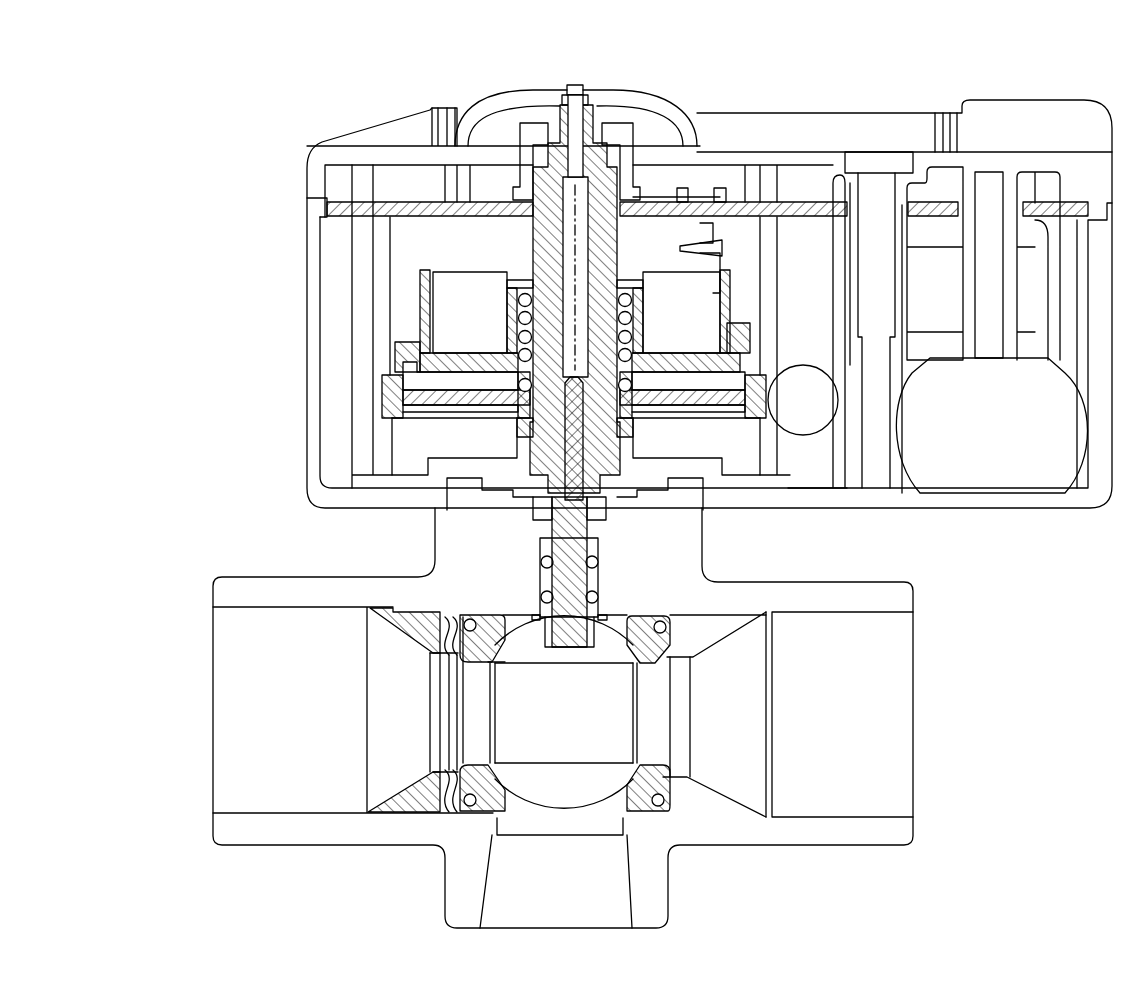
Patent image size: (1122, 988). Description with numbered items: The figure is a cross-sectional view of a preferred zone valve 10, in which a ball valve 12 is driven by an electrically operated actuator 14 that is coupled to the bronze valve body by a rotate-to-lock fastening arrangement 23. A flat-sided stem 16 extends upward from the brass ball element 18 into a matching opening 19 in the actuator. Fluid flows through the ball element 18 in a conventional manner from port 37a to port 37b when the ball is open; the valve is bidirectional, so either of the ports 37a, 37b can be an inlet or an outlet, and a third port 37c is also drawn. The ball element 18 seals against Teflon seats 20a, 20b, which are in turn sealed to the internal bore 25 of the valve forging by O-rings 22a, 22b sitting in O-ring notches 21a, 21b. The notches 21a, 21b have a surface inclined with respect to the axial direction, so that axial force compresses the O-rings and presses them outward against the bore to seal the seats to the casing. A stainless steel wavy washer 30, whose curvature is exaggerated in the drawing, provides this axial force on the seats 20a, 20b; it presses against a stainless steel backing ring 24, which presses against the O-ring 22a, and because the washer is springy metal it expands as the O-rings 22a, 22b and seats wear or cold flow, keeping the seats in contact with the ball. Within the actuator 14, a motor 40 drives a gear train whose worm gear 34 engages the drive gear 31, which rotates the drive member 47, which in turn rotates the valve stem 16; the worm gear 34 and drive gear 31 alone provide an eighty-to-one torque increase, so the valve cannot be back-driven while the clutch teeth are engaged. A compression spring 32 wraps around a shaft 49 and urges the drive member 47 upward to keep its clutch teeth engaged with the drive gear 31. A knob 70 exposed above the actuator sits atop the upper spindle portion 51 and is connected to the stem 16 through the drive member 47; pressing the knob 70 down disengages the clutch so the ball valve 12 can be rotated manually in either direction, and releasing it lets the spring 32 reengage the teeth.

The zone valve 10 is at (258, 118).
The ball valve 12 is at (240, 558).
The actuator 14 is at (246, 284).
The stem 16 is at (527, 430).
The ball element 18 is at (551, 795).
The opening 19 is at (604, 508).
The seat 20a is at (492, 616).
The seat 20b is at (637, 616).
The O-ring notch 21a is at (495, 664).
The O-ring notch 21b is at (668, 623).
The O-ring 22a is at (465, 813).
The O-ring 22b is at (651, 808).
The rotate-to-lock fastening arrangement 23 is at (493, 500).
The backing ring 24 is at (453, 812).
The internal bore 25 is at (540, 618).
The wavy washer 30 is at (447, 615).
The drive gear 31 is at (392, 420).
The compression spring 32 is at (642, 302).
The worm gear 34 is at (807, 413).
The port 37a is at (242, 813).
The port 37b is at (852, 815).
The third port 37c is at (622, 897).
The motor 40 is at (981, 464).
The drive member 47 is at (410, 335).
The shaft 49 is at (632, 443).
The spindle 51 is at (597, 112).
The knob 70 is at (553, 92).